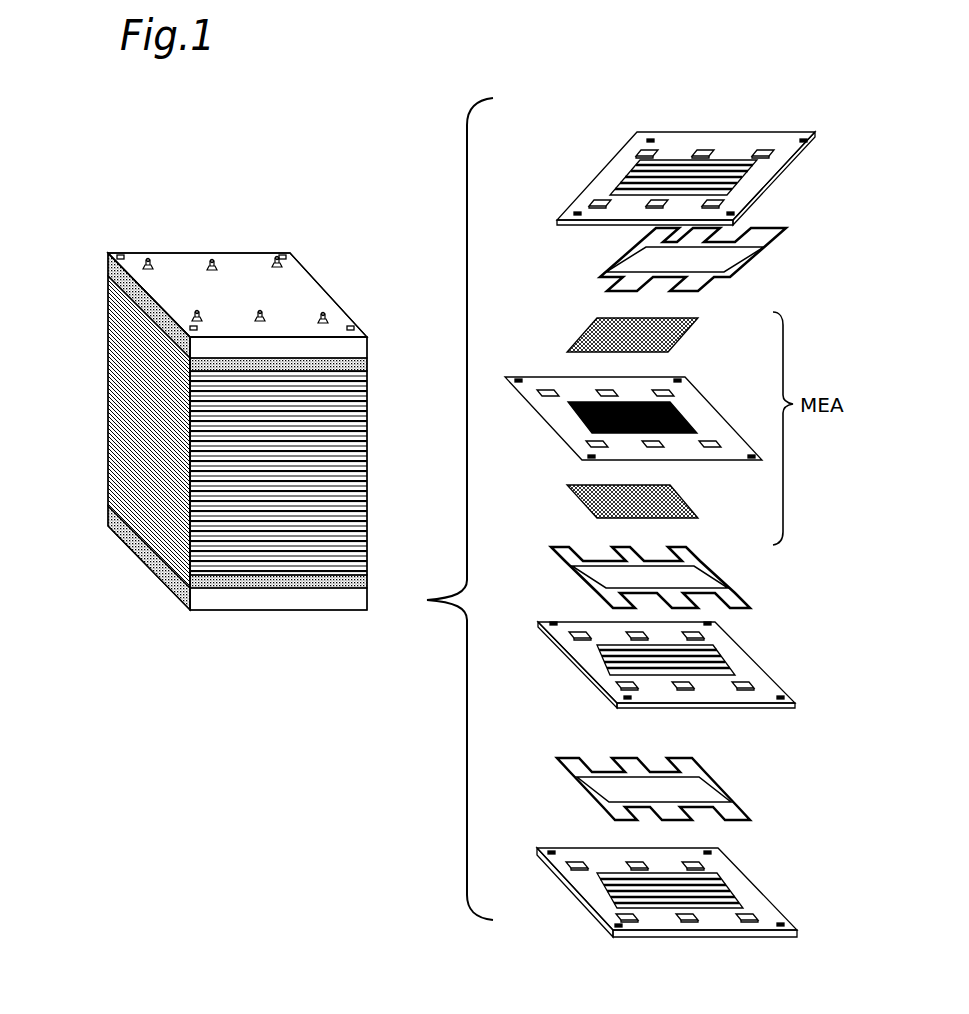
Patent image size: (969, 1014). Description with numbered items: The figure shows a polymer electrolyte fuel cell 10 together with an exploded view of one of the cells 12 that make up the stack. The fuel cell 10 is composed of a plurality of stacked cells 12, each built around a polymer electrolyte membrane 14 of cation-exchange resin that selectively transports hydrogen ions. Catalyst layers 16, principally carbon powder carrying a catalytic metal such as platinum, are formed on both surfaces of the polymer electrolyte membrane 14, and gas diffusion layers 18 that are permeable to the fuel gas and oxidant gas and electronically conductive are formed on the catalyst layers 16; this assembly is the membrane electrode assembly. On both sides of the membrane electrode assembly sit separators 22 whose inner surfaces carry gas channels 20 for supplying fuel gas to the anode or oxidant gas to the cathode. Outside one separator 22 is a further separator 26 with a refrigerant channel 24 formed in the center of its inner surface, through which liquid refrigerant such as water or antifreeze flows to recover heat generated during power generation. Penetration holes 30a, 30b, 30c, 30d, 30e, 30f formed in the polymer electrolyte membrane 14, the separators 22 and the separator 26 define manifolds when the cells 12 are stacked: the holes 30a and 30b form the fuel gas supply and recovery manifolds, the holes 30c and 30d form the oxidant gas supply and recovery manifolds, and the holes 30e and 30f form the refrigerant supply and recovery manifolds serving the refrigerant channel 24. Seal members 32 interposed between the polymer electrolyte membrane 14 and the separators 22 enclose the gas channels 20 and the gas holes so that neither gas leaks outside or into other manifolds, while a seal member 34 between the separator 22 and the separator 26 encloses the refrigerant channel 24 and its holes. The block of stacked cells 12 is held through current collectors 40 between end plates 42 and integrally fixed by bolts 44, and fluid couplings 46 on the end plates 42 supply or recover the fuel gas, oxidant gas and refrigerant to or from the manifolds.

The polymer electrolyte fuel cell 10 is at (62, 243).
The cell 12 is at (354, 570).
The polymer electrolyte membrane 14 is at (722, 464).
The catalyst layer 16 is at (695, 428).
The gas diffusion layer 18 is at (687, 338).
The gas channel 20 is at (745, 180).
The separator 22 is at (663, 139).
The refrigerant channel 24 is at (723, 883).
The separator 26 is at (740, 934).
The penetration hole 30a is at (641, 152).
The penetration hole 30b is at (720, 206).
The penetration hole 30c is at (597, 205).
The penetration hole 30d is at (766, 151).
The penetration hole 30e is at (651, 207).
The penetration hole 30f is at (707, 150).
The seal member 32 is at (730, 281).
The seal member 34 is at (582, 787).
The current collector 40 is at (367, 364).
The end plate 42 is at (255, 288).
The bolt 44 is at (357, 328).
The fluid coupling 46 is at (146, 266).